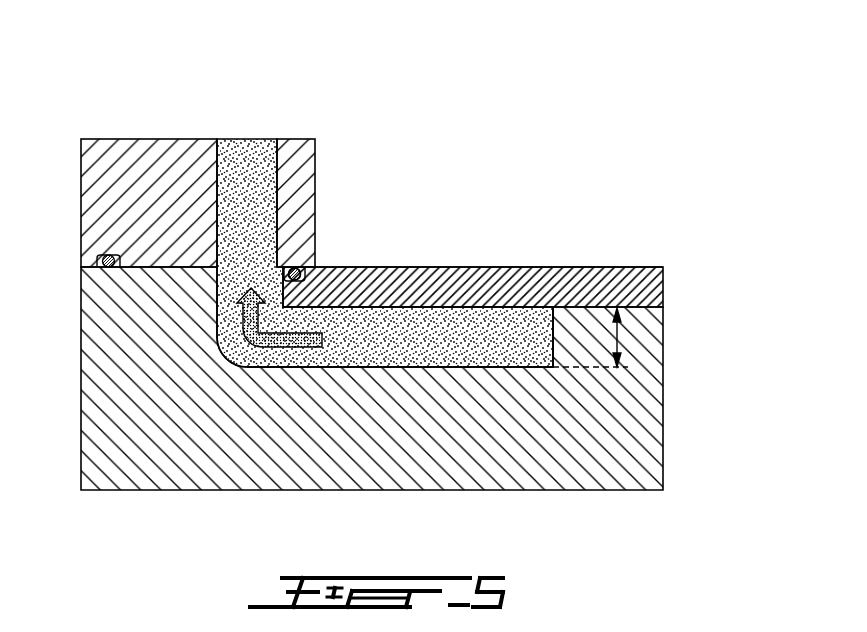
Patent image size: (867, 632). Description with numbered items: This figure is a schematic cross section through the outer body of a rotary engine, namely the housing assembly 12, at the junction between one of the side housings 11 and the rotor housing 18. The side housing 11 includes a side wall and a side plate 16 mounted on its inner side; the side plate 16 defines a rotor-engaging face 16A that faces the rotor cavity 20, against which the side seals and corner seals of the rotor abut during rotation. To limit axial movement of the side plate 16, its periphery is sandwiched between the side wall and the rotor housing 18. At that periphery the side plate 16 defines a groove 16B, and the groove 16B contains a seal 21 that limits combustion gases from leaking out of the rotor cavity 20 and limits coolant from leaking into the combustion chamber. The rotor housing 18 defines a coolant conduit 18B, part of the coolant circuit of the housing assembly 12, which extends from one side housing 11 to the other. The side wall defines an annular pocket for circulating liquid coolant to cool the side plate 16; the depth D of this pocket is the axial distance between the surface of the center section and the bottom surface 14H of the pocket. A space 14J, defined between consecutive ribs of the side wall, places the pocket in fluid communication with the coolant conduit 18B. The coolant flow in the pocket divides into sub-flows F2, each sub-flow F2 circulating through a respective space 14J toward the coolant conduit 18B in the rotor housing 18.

The side housing 11 is at (715, 267).
The housing assembly 12 is at (513, 141).
The space 14J is at (217, 290).
The bottom surface of the pocket 14H is at (417, 367).
The side plate 16 is at (477, 244).
The rotor-engaging face 16A is at (380, 268).
The groove 16B is at (295, 263).
The seal 21 is at (295, 274).
The rotor housing 18 is at (242, 165).
The coolant conduit 18B is at (287, 175).
The rotor cavity 20 is at (495, 198).
The depth of the pocket D is at (617, 337).
The sub-flow F2 is at (255, 337).